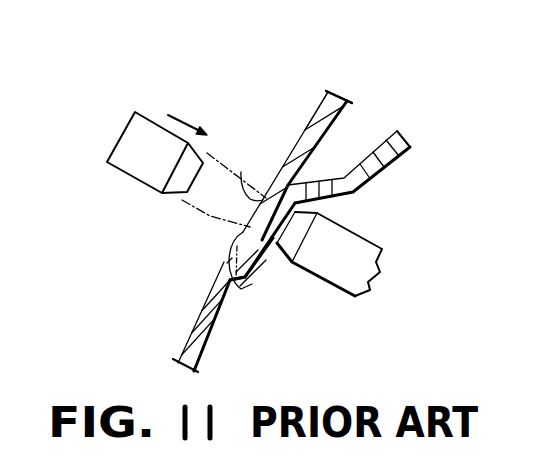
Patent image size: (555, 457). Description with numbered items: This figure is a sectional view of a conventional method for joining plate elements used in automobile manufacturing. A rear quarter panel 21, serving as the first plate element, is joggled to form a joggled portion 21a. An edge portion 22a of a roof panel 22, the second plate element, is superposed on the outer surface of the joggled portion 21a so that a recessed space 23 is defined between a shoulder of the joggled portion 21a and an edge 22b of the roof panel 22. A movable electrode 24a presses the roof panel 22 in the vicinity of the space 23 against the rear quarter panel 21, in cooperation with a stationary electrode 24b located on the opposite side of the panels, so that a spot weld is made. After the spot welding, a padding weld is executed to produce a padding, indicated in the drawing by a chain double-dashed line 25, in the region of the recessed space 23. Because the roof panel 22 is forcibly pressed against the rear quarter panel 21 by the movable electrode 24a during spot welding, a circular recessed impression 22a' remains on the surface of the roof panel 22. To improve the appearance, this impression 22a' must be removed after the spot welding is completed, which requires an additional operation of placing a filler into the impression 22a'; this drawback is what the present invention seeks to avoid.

The rear quarter panel 21 is at (178, 341).
The joggled portion 21a is at (257, 280).
The roof panel 22 is at (318, 96).
The edge portion 22a is at (297, 96).
The circular recessed impression 22a' is at (234, 168).
The edge 22b is at (237, 243).
The recessed space 23 is at (243, 293).
The movable electrode 24a is at (155, 132).
The stationary electrode 24b is at (350, 246).
The padding 25 is at (227, 263).